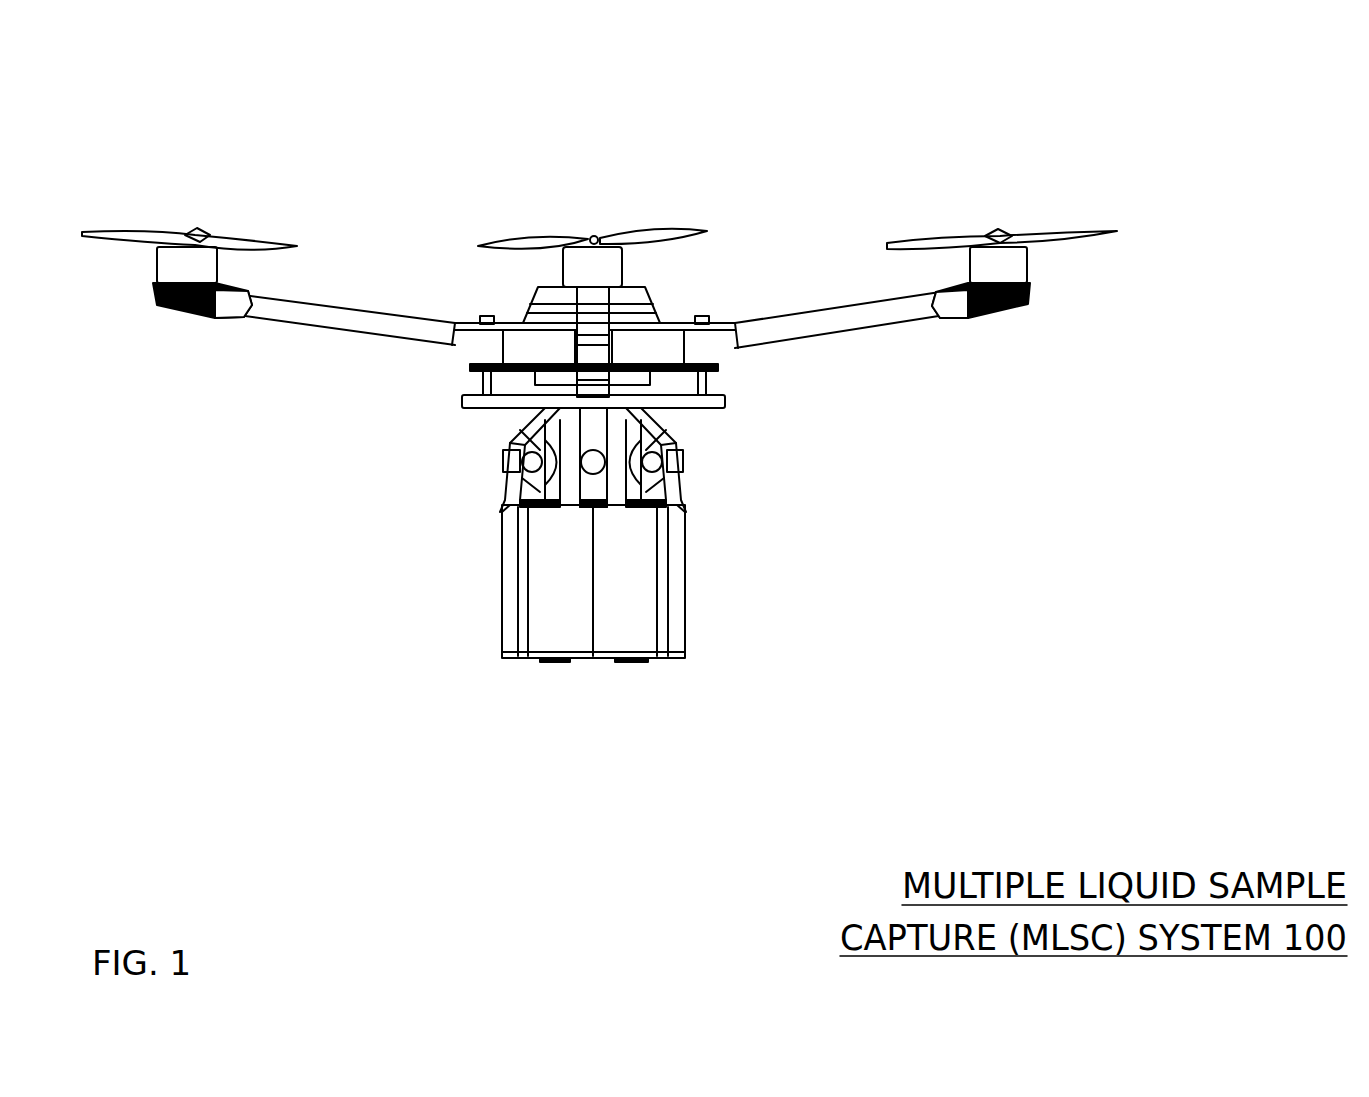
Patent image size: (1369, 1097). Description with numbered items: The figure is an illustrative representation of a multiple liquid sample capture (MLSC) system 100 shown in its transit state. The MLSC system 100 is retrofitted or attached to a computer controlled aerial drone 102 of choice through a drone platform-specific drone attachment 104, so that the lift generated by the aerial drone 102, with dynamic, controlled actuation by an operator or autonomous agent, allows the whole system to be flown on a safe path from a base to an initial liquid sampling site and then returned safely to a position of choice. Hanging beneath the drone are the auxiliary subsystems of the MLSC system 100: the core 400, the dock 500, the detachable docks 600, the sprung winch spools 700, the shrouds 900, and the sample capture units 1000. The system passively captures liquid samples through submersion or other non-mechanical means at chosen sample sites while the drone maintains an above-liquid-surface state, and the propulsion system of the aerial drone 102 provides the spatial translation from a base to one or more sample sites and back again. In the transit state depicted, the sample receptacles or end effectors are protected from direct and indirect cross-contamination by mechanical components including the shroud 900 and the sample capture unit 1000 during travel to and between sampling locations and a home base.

The multiple liquid sample capture (MLSC) system 100 is at (492, 639).
The aerial drone 102 is at (590, 235).
The drone attachment 104 is at (460, 400).
The core 400 is at (505, 484).
The dock 500 is at (692, 462).
The detachable docks 600 is at (514, 436).
The sprung winch spools (SWS) 700 is at (690, 450).
The shrouds 900 is at (688, 632).
The sample capture units (SCU) 1000 is at (692, 602).